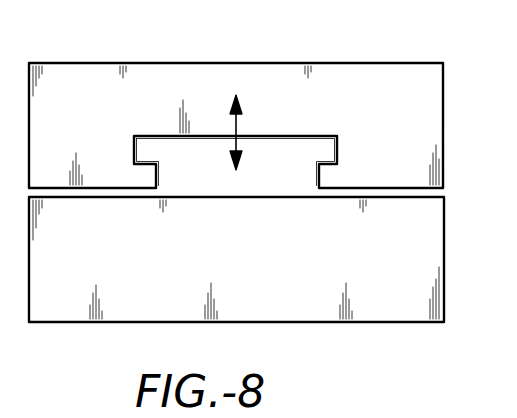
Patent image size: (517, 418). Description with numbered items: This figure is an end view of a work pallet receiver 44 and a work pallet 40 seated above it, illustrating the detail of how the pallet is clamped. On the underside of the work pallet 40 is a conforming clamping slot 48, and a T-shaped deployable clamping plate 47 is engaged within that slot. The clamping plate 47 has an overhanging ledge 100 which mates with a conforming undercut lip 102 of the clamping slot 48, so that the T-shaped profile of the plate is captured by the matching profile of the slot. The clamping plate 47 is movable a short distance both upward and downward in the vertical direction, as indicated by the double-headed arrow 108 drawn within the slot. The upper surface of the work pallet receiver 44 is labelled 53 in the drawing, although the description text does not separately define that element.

The work pallet 40 is at (428, 119).
The work pallet receiver 44 is at (423, 296).
The deployable clamping plate 47 is at (273, 153).
The conforming clamping slot 48 is at (160, 136).
The upper surface of second tile 53 is at (387, 198).
The overhanging ledge 100 is at (318, 150).
The conforming undercut lip 102 is at (330, 172).
The arrow 108 is at (237, 127).